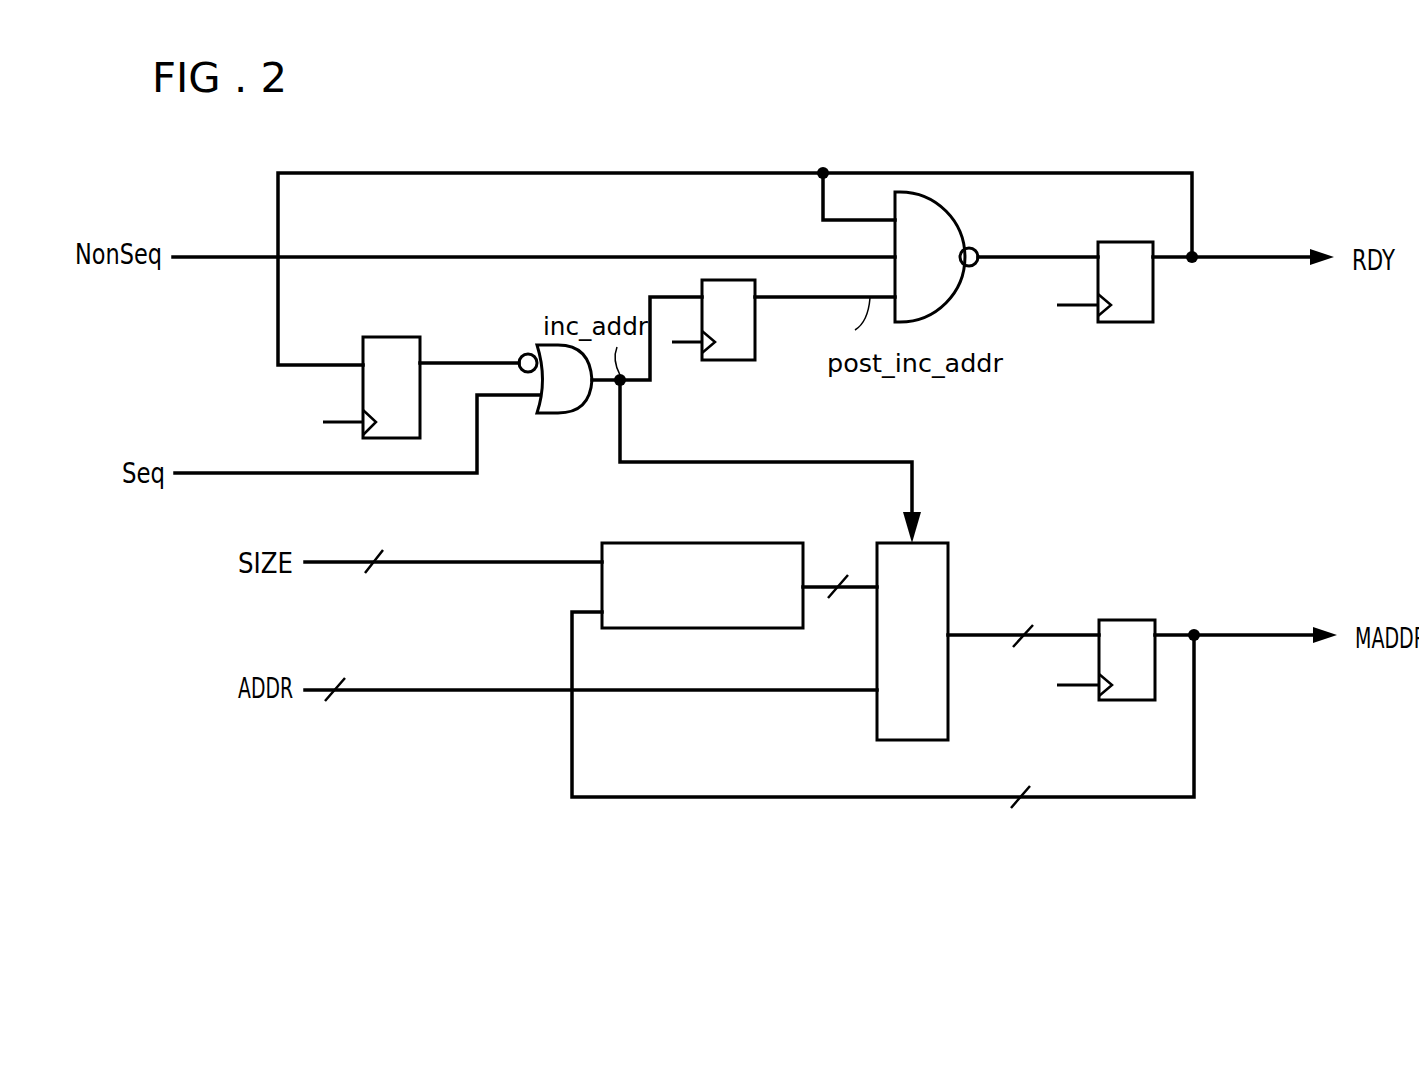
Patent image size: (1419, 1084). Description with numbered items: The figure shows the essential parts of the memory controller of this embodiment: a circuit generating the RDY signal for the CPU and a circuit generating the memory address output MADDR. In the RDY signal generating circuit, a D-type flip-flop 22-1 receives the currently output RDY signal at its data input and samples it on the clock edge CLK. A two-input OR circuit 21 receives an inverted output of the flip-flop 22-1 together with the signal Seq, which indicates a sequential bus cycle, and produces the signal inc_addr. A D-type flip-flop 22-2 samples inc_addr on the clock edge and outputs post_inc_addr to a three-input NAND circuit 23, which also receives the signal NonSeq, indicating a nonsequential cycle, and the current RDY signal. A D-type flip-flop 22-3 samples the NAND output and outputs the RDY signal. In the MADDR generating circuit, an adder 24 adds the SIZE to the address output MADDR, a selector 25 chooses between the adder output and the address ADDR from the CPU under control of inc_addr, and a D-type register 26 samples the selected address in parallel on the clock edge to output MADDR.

The 2-input OR circuit 21 is at (536, 347).
The D-type flip-flop 22-1 is at (403, 336).
The D-type flip-flop 22-2 is at (735, 361).
The D-type flip-flop 22-3 is at (1125, 242).
The 3-input NAND circuit 23 is at (952, 216).
The adder 24 is at (758, 542).
The selector 25 is at (932, 542).
The D-type register 26 is at (1137, 620).